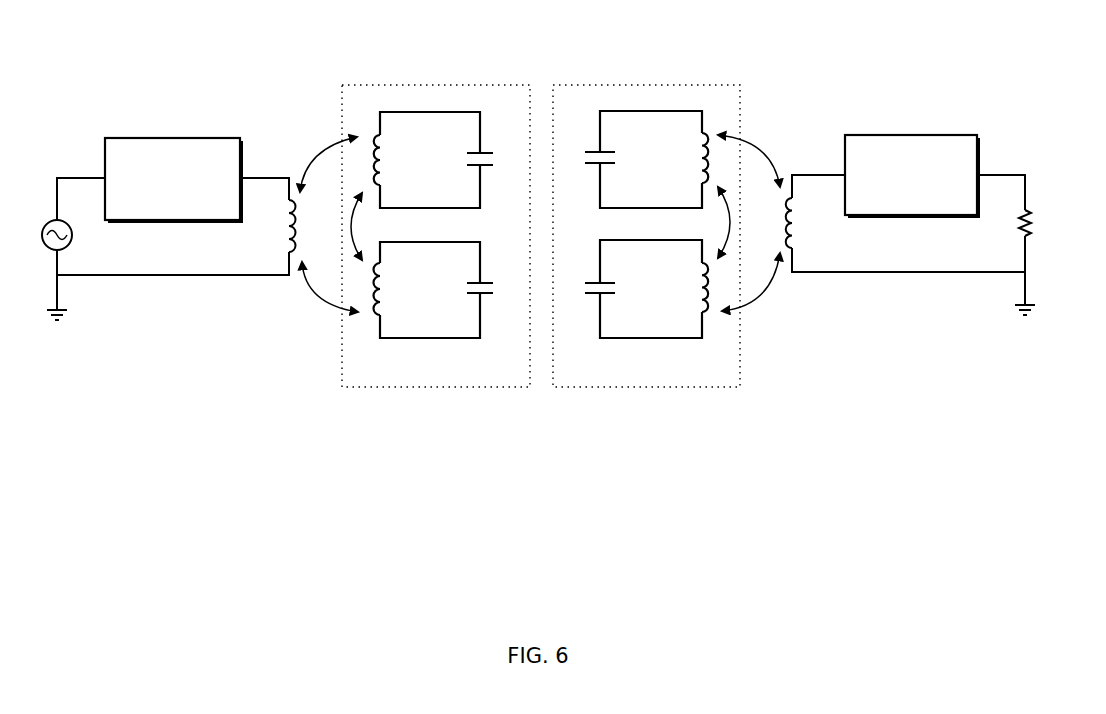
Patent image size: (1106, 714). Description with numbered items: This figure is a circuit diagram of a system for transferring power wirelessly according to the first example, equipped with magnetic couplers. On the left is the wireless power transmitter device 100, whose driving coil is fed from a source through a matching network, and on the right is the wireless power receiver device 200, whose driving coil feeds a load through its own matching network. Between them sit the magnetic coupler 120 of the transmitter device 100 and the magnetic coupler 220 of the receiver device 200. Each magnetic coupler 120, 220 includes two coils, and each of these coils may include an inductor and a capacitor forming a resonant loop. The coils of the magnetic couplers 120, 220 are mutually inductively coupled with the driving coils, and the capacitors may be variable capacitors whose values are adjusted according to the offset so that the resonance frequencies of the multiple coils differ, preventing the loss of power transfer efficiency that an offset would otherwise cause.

The wireless power transmitter device 100 is at (385, 62).
The magnetic coupler 120 is at (450, 388).
The wireless power receiver device 200 is at (899, 62).
The magnetic coupler 220 is at (660, 388).